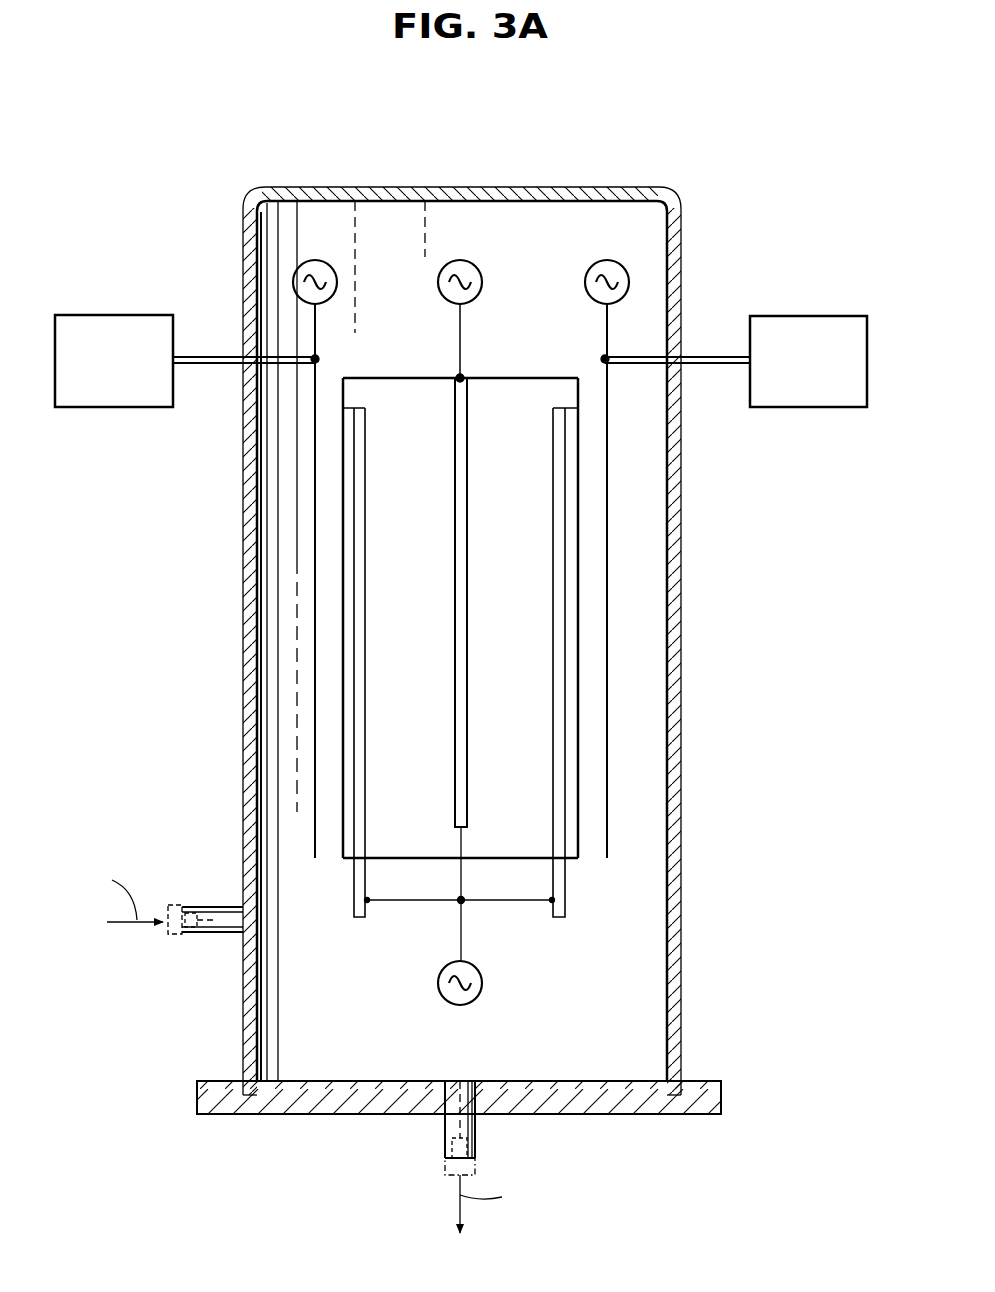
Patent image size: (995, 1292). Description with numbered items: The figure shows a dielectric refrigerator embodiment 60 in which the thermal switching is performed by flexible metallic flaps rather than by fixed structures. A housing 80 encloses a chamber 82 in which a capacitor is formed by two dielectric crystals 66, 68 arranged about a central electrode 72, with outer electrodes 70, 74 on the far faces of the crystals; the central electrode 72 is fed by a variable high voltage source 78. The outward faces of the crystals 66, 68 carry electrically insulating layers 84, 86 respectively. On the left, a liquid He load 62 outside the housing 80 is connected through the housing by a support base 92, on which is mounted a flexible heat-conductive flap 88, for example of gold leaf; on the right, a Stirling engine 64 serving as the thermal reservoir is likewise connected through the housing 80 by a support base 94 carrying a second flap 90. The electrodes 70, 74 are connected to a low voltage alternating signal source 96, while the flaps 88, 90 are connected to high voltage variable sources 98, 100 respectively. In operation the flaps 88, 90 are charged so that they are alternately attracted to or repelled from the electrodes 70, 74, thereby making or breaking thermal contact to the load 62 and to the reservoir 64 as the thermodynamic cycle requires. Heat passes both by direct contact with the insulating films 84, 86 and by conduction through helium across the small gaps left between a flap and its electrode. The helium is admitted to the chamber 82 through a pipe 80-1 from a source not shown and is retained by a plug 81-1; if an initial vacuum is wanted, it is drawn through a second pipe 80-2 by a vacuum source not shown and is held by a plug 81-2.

The embodiment 60 is at (707, 200).
The liquid He load 62 is at (93, 315).
The Stirling engine 64 is at (833, 316).
The crystal 66 is at (403, 385).
The crystal 68 is at (528, 385).
The electrode 70 is at (358, 918).
The electrode 72 is at (455, 808).
The electrode 74 is at (555, 918).
The variable high voltage source 78 is at (461, 260).
The housing 80 is at (283, 192).
The pipe 80-1 is at (208, 907).
The pipe 80-2 is at (445, 1142).
The plug 81-1 is at (168, 931).
The plug 81-2 is at (445, 1175).
The chamber 82 is at (297, 1007).
The insulating layer 84 is at (347, 848).
The insulating layer 86 is at (577, 853).
The flexible metallic flap 88 is at (313, 835).
The flexible metallic flap 90 is at (608, 833).
The support base 92 is at (212, 357).
The support base 94 is at (713, 357).
The low voltage alternating signal source 96 is at (482, 982).
The high voltage variable source 98 is at (315, 260).
The high voltage variable source 100 is at (607, 260).